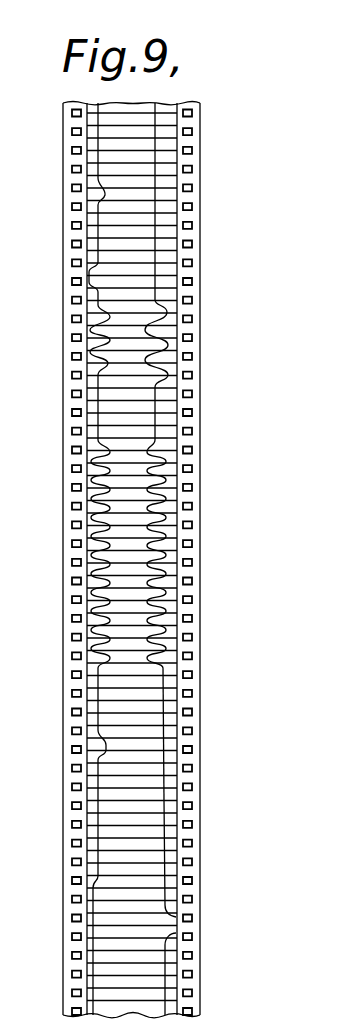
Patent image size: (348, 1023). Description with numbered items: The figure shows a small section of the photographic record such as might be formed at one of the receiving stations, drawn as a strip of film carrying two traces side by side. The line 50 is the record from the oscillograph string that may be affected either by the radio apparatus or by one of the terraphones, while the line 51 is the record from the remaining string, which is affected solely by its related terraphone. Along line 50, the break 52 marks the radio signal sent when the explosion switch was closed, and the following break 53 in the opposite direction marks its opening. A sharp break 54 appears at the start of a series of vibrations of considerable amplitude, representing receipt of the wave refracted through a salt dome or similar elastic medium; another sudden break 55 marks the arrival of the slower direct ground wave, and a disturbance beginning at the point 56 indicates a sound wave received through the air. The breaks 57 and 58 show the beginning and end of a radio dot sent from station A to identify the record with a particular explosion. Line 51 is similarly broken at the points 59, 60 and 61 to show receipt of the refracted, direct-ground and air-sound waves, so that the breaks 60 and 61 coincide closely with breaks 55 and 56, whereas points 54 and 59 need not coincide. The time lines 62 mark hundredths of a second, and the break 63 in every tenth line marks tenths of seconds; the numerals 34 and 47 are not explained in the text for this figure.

The film strip 34 is at (200, 828).
The sprocket hole margin 47 is at (42, 563).
The line 50 is at (100, 997).
The line 51 is at (165, 996).
The break 52 is at (92, 886).
The break 53 is at (103, 750).
The sharp break 54 is at (97, 665).
The sudden break 55 is at (95, 537).
The point 56 is at (95, 372).
The break 57 is at (94, 285).
The break 58 is at (104, 193).
The point 59 is at (160, 665).
The point 60 is at (168, 545).
The point 61 is at (165, 384).
The time lines 62 is at (176, 933).
The break 63 is at (128, 770).